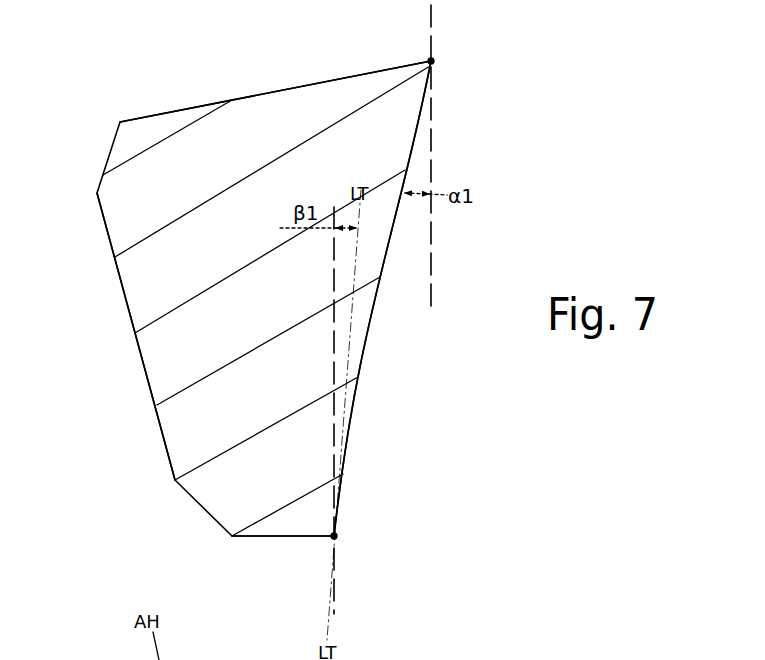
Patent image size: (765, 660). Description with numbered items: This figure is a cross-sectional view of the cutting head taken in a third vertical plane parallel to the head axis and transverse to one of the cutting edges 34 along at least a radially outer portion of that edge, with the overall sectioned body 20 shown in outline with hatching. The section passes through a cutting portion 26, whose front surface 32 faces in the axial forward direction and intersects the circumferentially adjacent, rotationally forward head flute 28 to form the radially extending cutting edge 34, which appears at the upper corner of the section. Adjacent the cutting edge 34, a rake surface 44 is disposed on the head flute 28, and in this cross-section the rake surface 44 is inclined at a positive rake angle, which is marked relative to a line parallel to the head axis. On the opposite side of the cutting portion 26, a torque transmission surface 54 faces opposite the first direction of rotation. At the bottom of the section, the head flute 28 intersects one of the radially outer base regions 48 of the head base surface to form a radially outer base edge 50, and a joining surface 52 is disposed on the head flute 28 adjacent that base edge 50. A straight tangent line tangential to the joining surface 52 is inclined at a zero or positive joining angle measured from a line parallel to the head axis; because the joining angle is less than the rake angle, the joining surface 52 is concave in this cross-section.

The airfoil section 20 is at (167, 95).
The front surface 32 is at (290, 87).
The cutting edge 34 is at (433, 59).
The rake surface 44 is at (422, 108).
The head flute 28 is at (403, 279).
The joining surface 52 is at (350, 432).
The cutting portion 26 is at (266, 308).
The torque transmission surface 54 is at (132, 325).
The radially outer base region 48 is at (268, 538).
The radially outer base edge 50 is at (333, 538).